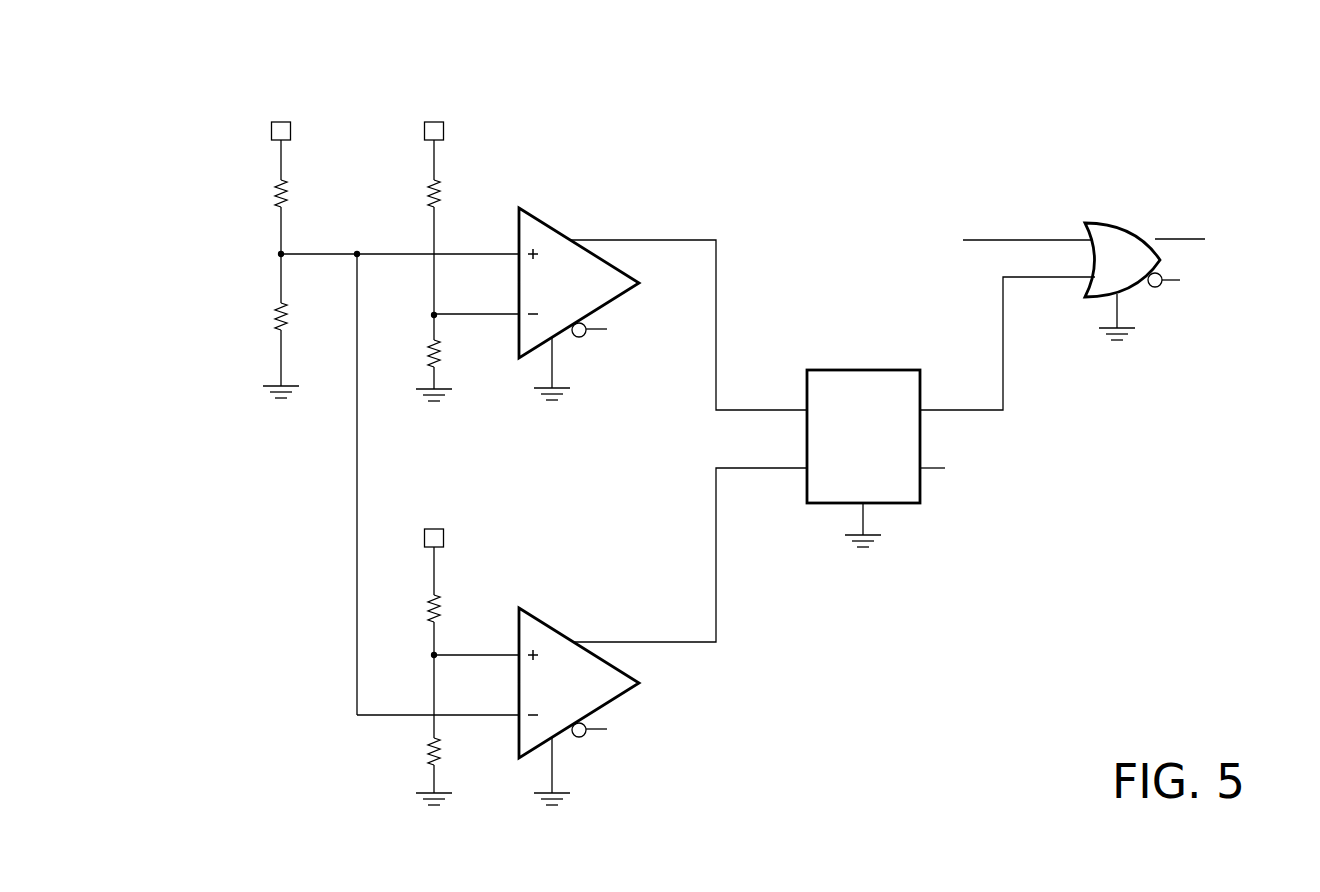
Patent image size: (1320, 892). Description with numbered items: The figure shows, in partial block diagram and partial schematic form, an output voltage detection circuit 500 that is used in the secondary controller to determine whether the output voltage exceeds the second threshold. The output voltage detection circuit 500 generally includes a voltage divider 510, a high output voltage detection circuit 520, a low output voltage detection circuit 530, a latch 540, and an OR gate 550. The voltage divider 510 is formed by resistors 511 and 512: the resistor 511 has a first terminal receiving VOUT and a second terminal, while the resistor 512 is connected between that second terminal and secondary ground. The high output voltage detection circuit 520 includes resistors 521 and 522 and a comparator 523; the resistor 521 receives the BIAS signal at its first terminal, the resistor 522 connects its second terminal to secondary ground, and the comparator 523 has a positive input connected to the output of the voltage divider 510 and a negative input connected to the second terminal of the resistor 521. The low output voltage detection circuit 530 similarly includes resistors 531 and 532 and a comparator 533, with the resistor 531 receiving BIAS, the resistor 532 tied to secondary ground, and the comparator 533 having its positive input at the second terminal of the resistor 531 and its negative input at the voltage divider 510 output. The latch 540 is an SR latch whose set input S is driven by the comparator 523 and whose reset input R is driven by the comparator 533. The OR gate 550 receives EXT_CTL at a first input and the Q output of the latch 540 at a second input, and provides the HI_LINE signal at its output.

The output voltage detection circuit 500 is at (150, 118).
The voltage divider 510 is at (236, 96).
The resistor 511 is at (267, 193).
The resistor 512 is at (265, 327).
The high output voltage detection circuit 520 is at (504, 113).
The resistor 521 is at (418, 193).
The resistor 522 is at (420, 362).
The comparator 523 is at (547, 220).
The low output voltage detection circuit 530 is at (506, 518).
The resistor 531 is at (420, 610).
The resistor 532 is at (420, 747).
The comparator 533 is at (547, 620).
The latch 540 is at (843, 370).
The OR gate 550 is at (1115, 223).